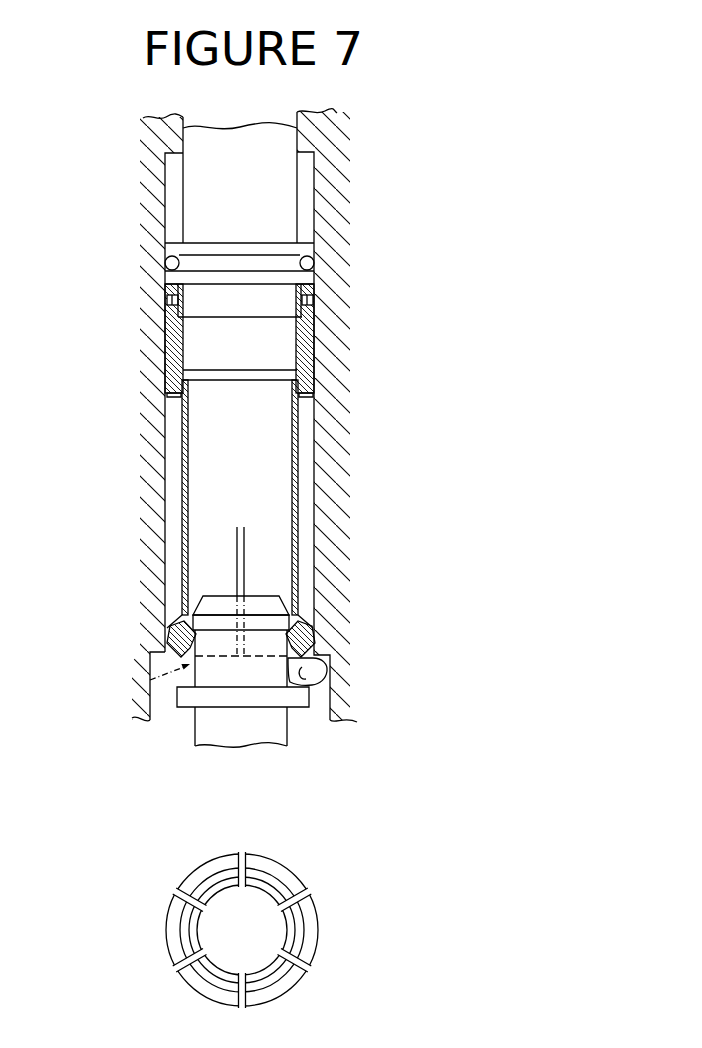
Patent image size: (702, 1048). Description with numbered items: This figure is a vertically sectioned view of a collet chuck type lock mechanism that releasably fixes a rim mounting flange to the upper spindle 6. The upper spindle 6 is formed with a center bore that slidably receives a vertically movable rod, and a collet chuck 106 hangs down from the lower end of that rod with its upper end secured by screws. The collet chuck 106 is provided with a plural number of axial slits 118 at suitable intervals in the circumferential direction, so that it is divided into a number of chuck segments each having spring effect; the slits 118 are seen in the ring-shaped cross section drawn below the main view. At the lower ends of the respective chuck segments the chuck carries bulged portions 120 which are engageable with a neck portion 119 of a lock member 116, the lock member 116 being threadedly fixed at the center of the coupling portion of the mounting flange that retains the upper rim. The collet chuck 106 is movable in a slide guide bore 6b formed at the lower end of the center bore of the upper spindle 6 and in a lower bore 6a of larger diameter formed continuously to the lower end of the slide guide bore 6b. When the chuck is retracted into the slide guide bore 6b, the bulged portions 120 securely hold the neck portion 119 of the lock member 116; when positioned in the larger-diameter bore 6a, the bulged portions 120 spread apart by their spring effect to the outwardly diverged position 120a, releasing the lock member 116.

The upper spindle 6 is at (230, 415).
The lower bore 6a is at (150, 661).
The slide guide bore 6b is at (170, 582).
The collet chuck 106 is at (305, 353).
The lock member 116 is at (287, 729).
The axial slits 118 is at (303, 890).
The neck portion 119 is at (150, 680).
The bulged portions 120 is at (167, 635).
The outwardly diverged position 120a is at (327, 665).